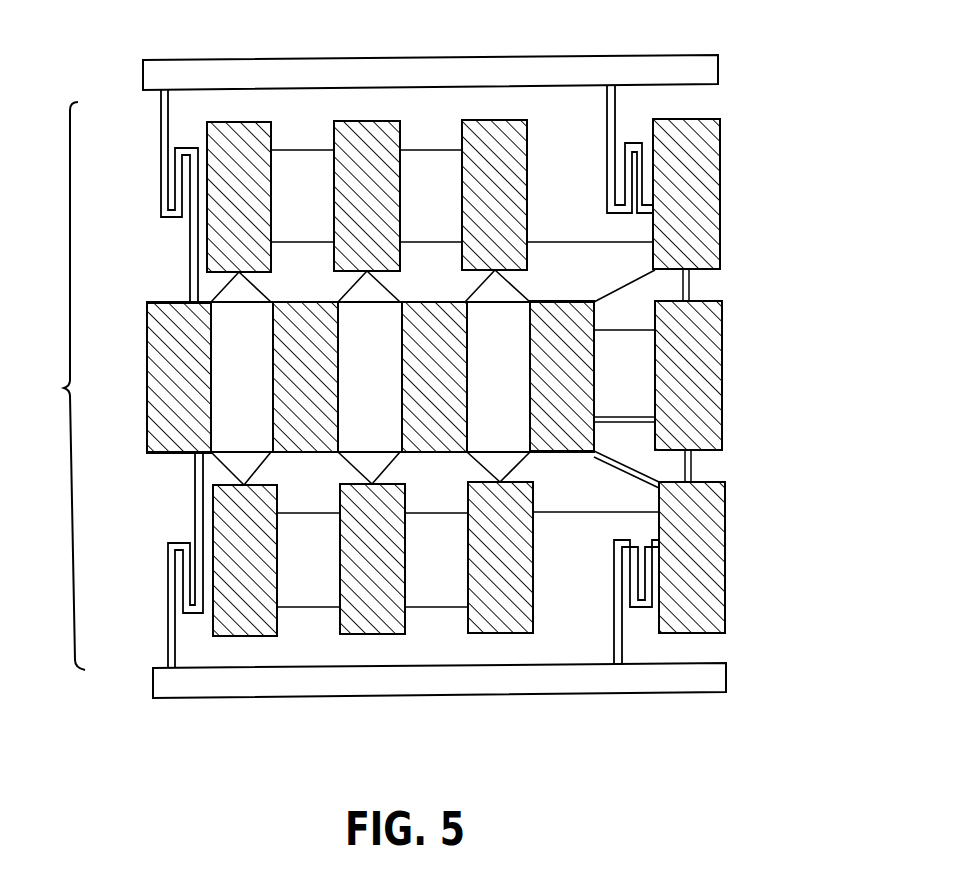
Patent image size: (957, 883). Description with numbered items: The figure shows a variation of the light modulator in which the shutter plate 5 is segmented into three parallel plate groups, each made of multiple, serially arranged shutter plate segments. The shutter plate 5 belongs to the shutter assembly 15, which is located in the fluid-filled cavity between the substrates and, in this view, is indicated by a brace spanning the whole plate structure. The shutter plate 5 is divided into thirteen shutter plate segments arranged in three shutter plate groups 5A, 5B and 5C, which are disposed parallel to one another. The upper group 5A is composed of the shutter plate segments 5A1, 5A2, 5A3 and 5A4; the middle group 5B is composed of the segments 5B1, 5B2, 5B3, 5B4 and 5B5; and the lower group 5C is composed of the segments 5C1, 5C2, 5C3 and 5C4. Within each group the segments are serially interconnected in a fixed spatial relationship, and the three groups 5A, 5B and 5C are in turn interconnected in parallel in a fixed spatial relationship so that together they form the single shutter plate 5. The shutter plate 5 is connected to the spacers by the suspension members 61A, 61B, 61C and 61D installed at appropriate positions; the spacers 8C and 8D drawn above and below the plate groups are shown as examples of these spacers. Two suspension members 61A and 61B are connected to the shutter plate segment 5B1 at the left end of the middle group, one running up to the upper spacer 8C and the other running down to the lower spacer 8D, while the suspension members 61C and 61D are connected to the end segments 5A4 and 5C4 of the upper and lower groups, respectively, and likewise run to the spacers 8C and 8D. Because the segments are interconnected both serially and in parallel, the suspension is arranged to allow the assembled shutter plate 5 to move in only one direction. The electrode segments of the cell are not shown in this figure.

The shutter plate 5 is at (687, 116).
The shutter assembly 15 is at (53, 386).
The spacer 8C is at (208, 72).
The spacer 8D is at (222, 682).
The shutter plate group 5A is at (748, 201).
The shutter plate group 5B is at (748, 384).
The shutter plate group 5C is at (750, 564).
The shutter plate segment 5A1 is at (271, 126).
The shutter plate segment 5A2 is at (400, 125).
The shutter plate segment 5A3 is at (527, 124).
The shutter plate segment 5A4 is at (720, 124).
The shutter plate segment 5B1 is at (214, 410).
The shutter plate segment 5B2 is at (344, 410).
The shutter plate segment 5B3 is at (471, 410).
The shutter plate segment 5B4 is at (598, 410).
The shutter plate segment 5B5 is at (736, 302).
The shutter plate segment 5C1 is at (277, 630).
The shutter plate segment 5C2 is at (405, 628).
The shutter plate segment 5C3 is at (533, 627).
The shutter plate segment 5C4 is at (725, 627).
The suspension member 61A is at (161, 150).
The suspension member 61B is at (168, 606).
The suspension member 61C is at (607, 176).
The suspension member 61D is at (614, 558).